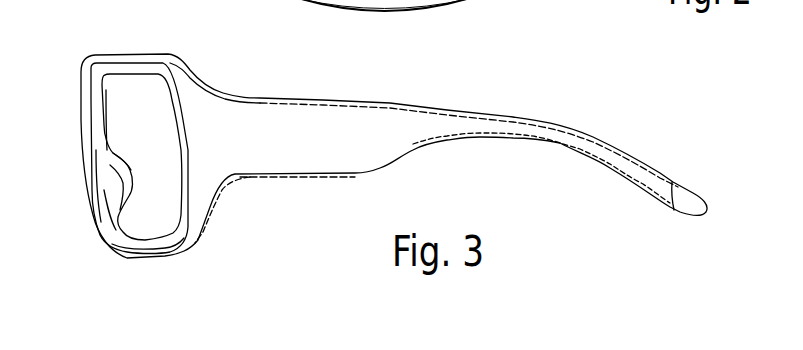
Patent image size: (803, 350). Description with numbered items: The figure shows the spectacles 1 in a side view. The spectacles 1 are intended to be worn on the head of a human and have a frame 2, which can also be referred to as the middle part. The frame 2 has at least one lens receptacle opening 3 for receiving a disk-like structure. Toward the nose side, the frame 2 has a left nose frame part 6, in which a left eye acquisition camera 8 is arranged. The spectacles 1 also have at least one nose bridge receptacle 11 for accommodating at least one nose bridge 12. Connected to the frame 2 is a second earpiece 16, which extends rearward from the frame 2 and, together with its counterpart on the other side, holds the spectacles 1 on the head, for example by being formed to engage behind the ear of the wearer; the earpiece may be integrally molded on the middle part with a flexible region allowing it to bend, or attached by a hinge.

The spectacles 1 is at (300, 117).
The frame 2 is at (148, 58).
The lens receptacle opening 3 is at (145, 230).
The left nose frame part 6 is at (108, 173).
The left eye acquisition camera 8 is at (122, 180).
The nose bridge receptacle 11 is at (129, 165).
The nose bridge 12 is at (110, 154).
The second earpiece 16 is at (373, 127).